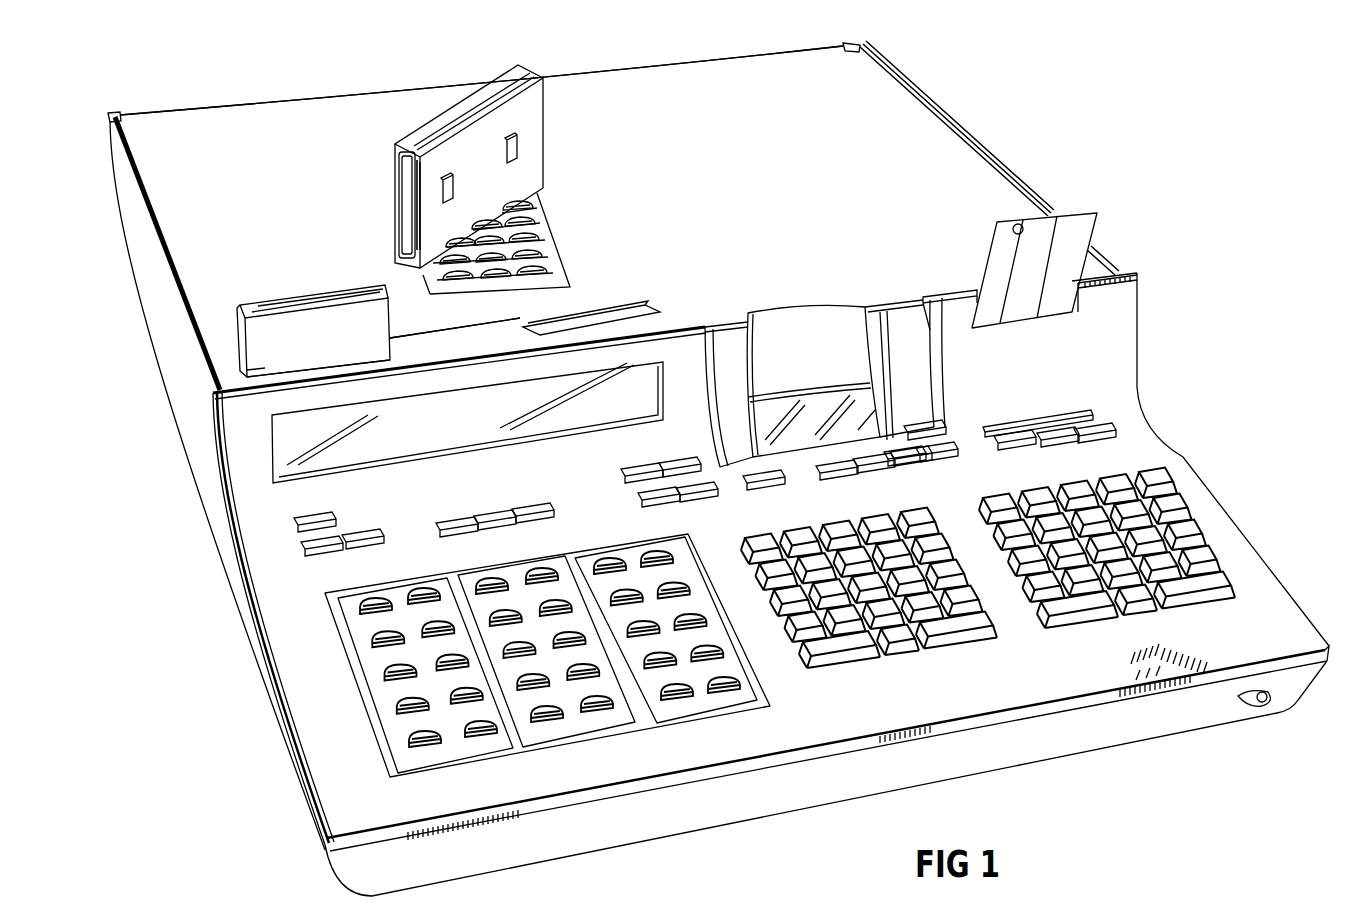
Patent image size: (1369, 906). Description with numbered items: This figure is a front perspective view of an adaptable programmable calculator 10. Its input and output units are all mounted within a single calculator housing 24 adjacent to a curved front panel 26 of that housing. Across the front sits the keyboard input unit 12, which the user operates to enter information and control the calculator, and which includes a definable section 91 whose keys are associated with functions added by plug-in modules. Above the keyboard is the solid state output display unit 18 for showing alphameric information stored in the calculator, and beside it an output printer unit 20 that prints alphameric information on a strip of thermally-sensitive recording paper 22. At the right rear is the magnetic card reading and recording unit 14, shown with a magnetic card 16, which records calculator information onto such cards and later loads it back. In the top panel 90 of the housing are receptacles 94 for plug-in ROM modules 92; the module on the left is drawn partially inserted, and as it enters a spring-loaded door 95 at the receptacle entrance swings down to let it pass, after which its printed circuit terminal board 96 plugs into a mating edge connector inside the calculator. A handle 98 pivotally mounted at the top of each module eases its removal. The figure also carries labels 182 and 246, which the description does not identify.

The adaptable programmable calculator 10 is at (1023, 82).
The keyboard input unit 12 is at (1180, 482).
The magnetic card reading and recording unit 14 is at (1120, 305).
The magnetic card 16 is at (1052, 216).
The solid state output display unit 18 is at (245, 450).
The output printer unit 20 is at (892, 325).
The thermally-sensitive recording paper 22 is at (775, 326).
The calculator housing 24 is at (157, 328).
The curved front panel 26 is at (250, 555).
The top panel 90 is at (262, 108).
The definable section 91 is at (322, 655).
The plug-in ROM module 92 is at (500, 80).
The receptacle 94 is at (272, 378).
The spring-loaded door 95 is at (450, 316).
The printed circuit terminal board 96 is at (416, 205).
The handle 98 is at (305, 300).
The line on/off switch 182 is at (1268, 697).
The card reader slot flange 246 is at (966, 296).